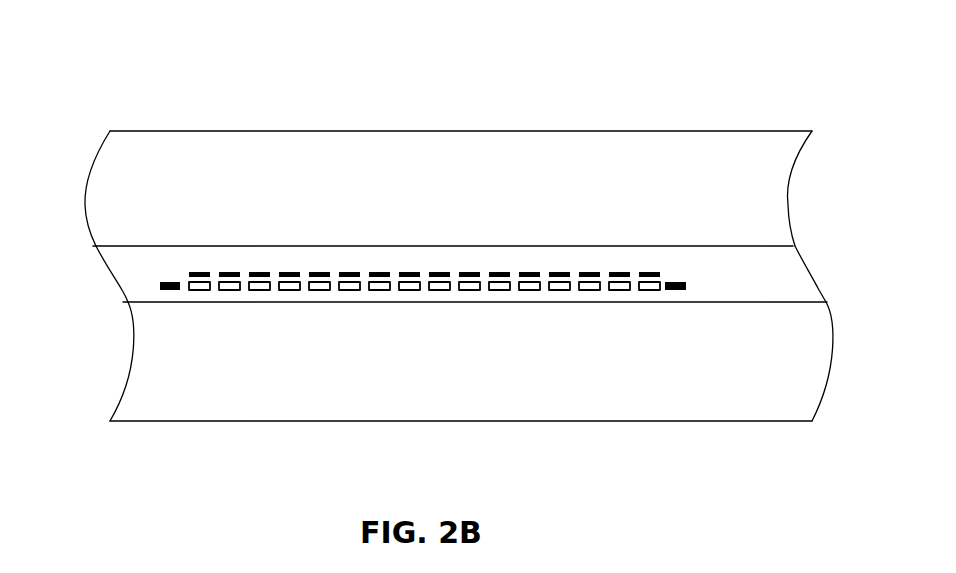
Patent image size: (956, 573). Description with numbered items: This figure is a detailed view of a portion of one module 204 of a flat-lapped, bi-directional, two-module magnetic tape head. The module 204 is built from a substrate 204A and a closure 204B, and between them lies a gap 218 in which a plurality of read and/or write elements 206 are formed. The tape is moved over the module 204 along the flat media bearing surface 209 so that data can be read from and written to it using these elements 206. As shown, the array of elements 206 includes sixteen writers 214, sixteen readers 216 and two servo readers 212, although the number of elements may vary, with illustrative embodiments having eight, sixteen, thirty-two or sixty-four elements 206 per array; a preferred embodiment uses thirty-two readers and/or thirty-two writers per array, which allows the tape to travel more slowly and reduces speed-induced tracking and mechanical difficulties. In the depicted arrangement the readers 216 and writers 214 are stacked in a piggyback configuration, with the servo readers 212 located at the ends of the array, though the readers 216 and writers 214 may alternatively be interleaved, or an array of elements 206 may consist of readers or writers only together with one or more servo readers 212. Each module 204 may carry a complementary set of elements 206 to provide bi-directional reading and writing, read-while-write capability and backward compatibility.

The module 204 is at (122, 93).
The substrate 204A is at (225, 131).
The closure 204B is at (287, 421).
The media bearing surface 209 is at (377, 207).
The elements 206 is at (716, 267).
The servo readers 212 is at (160, 284).
The writers 214 is at (554, 272).
The readers 216 is at (558, 291).
The gap 218 is at (814, 272).